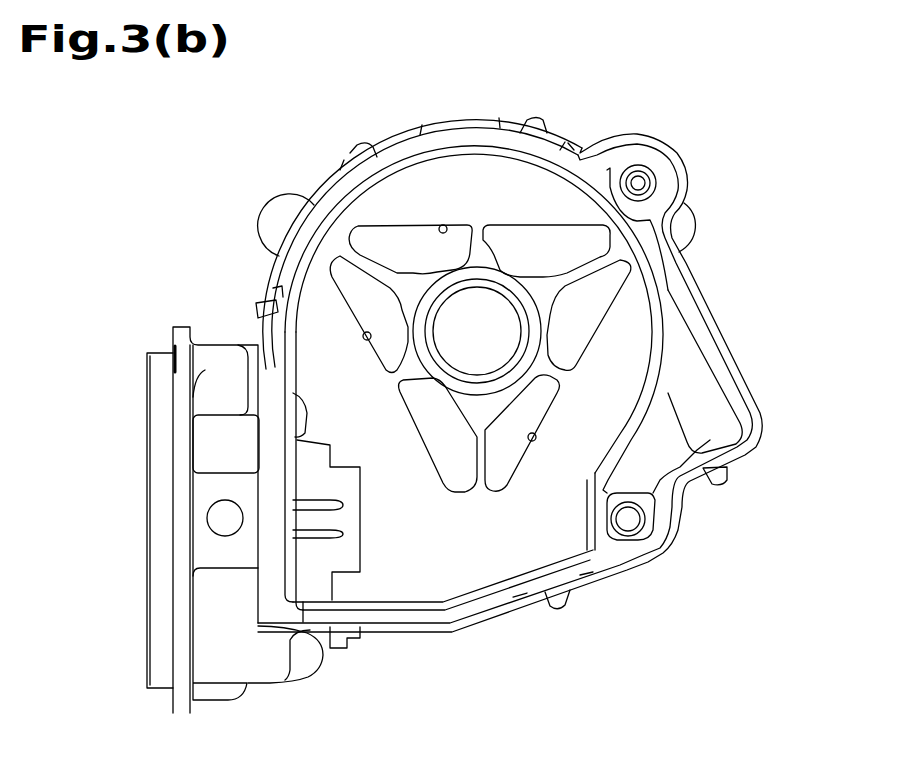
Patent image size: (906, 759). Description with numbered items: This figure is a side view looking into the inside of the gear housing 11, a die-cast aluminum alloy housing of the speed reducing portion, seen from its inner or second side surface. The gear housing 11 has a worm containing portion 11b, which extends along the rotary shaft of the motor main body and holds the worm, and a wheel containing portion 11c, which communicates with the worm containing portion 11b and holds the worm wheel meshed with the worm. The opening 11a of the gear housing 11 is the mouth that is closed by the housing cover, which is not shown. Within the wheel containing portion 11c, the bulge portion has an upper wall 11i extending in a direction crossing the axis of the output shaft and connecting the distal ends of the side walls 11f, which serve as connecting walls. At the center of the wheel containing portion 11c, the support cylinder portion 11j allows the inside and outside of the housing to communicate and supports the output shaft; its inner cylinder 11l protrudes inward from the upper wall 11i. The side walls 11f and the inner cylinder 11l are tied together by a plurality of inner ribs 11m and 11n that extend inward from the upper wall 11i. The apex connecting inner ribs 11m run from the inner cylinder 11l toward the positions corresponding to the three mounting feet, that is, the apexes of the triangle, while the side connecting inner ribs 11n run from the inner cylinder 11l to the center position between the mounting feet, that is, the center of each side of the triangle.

The gear housing 11 is at (750, 192).
The opening 11a is at (393, 155).
The worm containing portion 11b is at (488, 580).
The wheel containing portion 11c is at (457, 160).
The side walls 11f is at (443, 224).
The upper wall 11i is at (577, 345).
The support cylinder portion 11j is at (508, 297).
The inner cylinder 11l is at (447, 375).
The inner ribs (apex connecting ribs) 11m is at (367, 267).
The inner ribs (side connecting ribs) 11n is at (493, 247).